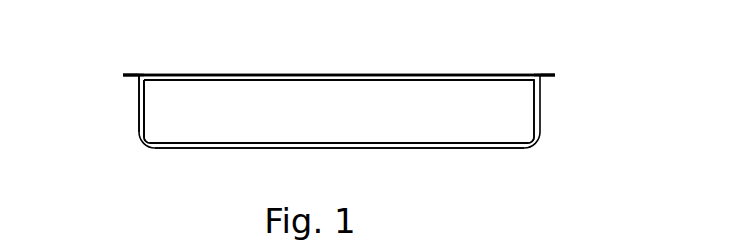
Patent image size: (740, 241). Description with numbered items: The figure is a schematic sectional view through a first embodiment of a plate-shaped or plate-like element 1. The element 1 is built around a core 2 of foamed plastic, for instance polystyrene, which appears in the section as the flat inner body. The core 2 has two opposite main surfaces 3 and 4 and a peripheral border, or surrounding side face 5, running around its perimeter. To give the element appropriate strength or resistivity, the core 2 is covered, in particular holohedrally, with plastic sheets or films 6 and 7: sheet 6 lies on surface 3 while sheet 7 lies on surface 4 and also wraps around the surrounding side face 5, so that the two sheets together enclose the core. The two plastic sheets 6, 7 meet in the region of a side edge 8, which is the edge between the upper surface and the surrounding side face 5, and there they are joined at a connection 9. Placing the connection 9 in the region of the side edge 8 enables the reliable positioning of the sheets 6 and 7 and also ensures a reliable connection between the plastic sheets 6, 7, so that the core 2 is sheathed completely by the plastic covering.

The plate-shaped element 1 is at (112, 62).
The core 2 is at (418, 107).
The surface 3 is at (250, 74).
The surface 4 is at (197, 145).
The surrounding side face 5 is at (143, 108).
The plastic sheet 6 is at (435, 77).
The plastic sheet 7 is at (487, 147).
The side edge 8 is at (145, 78).
The connection 9 is at (134, 81).